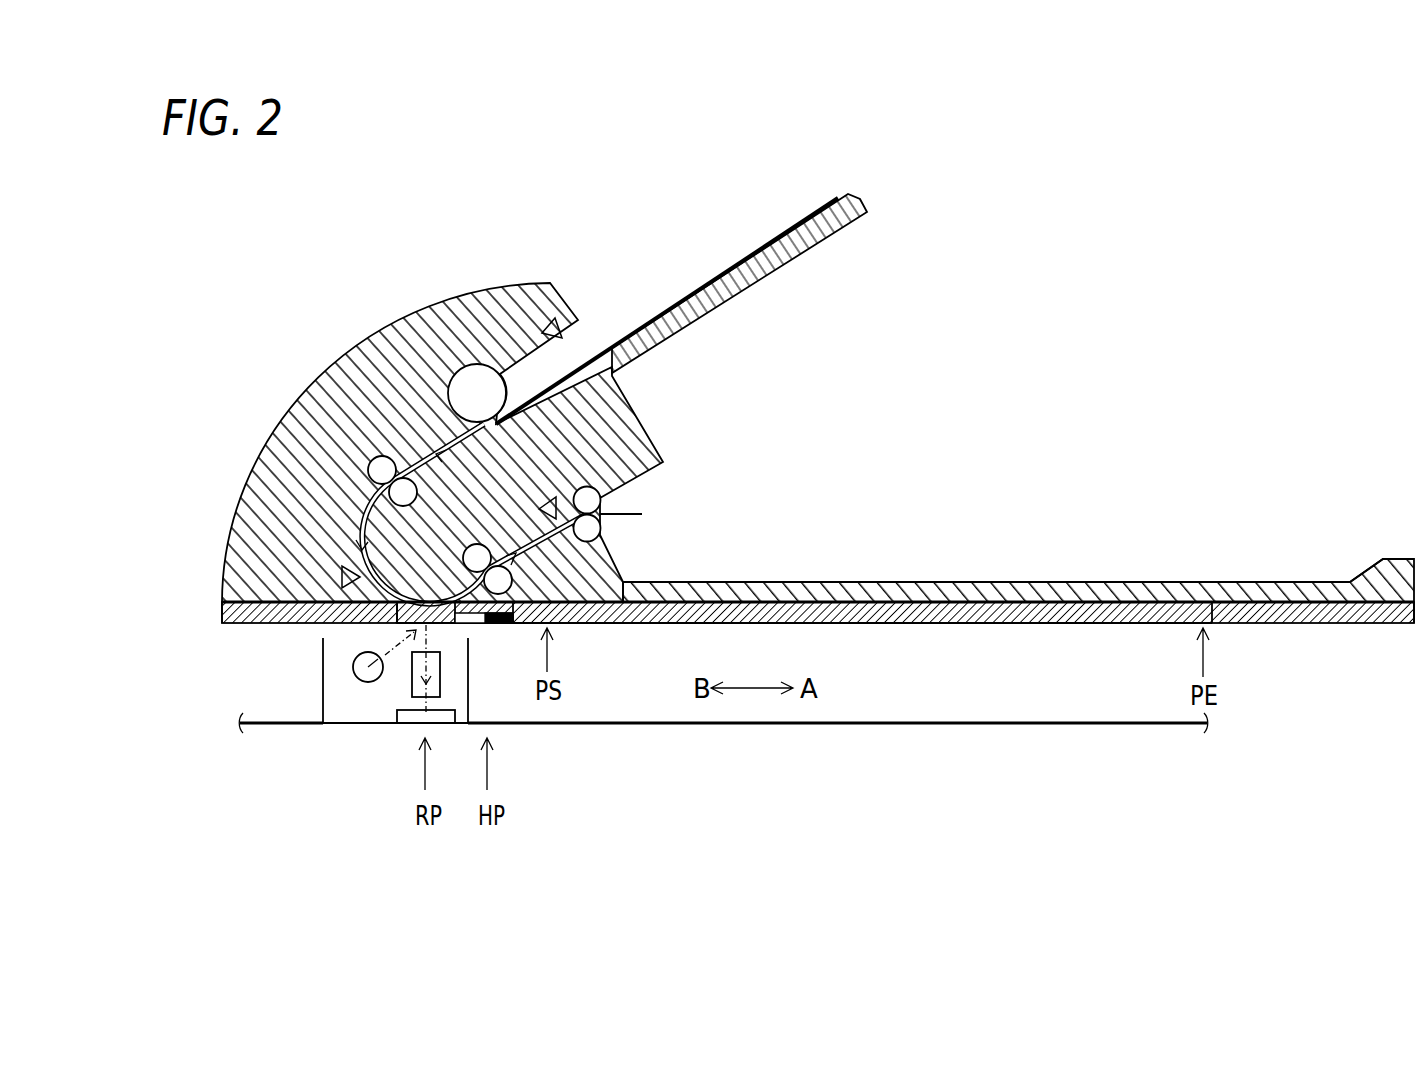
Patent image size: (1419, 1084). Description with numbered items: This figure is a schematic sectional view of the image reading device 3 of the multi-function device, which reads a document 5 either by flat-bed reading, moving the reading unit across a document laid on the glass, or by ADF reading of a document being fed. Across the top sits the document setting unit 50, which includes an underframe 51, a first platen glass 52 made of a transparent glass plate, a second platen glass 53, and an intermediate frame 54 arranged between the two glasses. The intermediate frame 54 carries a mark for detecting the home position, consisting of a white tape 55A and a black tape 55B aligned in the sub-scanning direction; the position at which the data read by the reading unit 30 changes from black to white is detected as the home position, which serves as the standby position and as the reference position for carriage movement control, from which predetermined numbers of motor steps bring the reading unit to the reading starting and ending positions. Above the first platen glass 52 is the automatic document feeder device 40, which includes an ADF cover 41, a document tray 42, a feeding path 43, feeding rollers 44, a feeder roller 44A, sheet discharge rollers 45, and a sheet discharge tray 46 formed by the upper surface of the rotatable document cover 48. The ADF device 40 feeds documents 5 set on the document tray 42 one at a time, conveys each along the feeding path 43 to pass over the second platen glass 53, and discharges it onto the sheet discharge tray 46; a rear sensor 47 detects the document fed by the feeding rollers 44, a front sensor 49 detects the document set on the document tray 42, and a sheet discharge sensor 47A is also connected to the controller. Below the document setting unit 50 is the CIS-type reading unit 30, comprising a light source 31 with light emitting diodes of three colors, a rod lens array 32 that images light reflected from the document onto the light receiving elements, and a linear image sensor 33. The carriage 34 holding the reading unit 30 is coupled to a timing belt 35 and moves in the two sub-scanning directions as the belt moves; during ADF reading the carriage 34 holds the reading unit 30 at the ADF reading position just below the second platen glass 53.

The image reading device 3 is at (970, 346).
The document 5 is at (737, 260).
The reading unit 30 is at (370, 758).
The light source 31 is at (353, 677).
The rod lens array 32 is at (412, 685).
The linear image sensor 33 is at (410, 718).
The carriage 34 is at (333, 727).
The timing belt 35 is at (1030, 726).
The automatic document feeder device 40 is at (427, 394).
The ADF cover 41 is at (386, 287).
The document tray 42 is at (786, 266).
The feeding path 43 is at (353, 525).
The feeding rollers 44 is at (380, 462).
The feeder roller 44A is at (471, 364).
The sheet discharge rollers 45 is at (590, 528).
The sheet discharge tray 46 is at (1018, 535).
The rear sensor 47 is at (342, 577).
The sheet discharge sensor 47A is at (548, 499).
The document cover 48 is at (1333, 582).
The front sensor 49 is at (560, 328).
The document setting unit 50 is at (773, 686).
The underframe 51 is at (235, 625).
The first platen glass 52 is at (943, 622).
The second platen glass 53 is at (437, 625).
The intermediate frame 54 is at (513, 625).
The white tape 55A is at (476, 625).
The black tape 55B is at (497, 625).